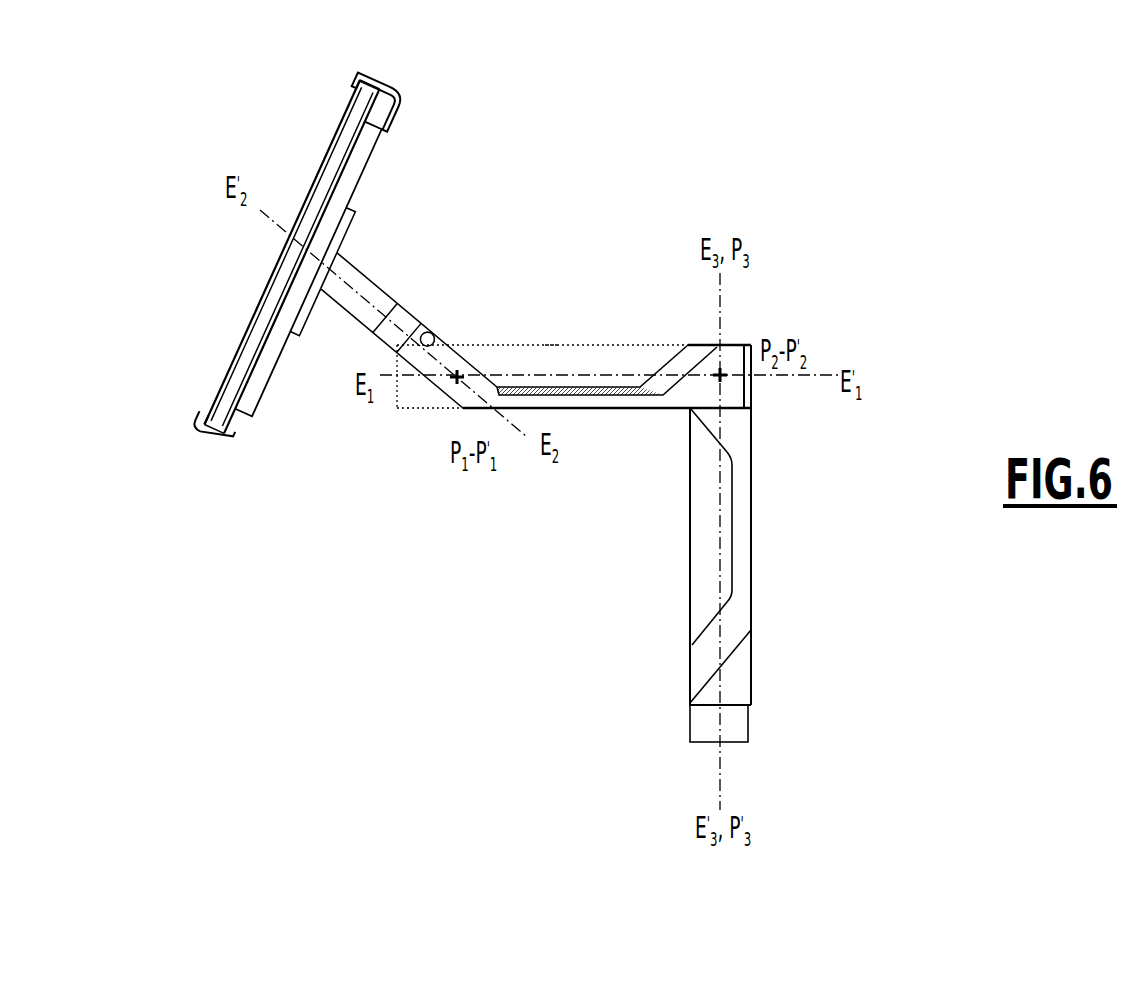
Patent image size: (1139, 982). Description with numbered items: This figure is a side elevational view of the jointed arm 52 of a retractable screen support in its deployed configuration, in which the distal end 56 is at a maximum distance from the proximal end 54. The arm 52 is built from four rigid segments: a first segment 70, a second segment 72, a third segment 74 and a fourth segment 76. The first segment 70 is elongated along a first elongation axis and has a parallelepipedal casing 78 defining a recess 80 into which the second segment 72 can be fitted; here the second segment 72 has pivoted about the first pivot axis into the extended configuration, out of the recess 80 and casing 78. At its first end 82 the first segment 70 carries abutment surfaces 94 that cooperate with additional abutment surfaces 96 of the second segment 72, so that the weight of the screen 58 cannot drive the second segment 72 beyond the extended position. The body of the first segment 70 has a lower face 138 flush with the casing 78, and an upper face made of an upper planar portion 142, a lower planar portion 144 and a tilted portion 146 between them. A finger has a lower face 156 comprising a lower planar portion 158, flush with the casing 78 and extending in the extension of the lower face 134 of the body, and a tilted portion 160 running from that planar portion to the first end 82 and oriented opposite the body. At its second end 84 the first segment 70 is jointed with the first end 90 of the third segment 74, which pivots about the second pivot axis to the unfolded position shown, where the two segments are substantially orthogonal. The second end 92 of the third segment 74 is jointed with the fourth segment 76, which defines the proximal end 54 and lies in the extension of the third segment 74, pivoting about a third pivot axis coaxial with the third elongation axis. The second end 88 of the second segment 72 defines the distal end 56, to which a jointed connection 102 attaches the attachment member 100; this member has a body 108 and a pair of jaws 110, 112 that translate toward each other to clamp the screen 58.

The arm 52 is at (668, 213).
The proximal end 54 is at (733, 725).
The distal end 56 is at (345, 268).
The screen 58 is at (345, 158).
The first segment 70 is at (595, 412).
The second segment 72 is at (405, 302).
The third segment 74 is at (755, 526).
The fourth segment 76 is at (689, 722).
The parallelepipedal casing 78 is at (553, 345).
The recess 80 is at (624, 360).
The first end 82 is at (417, 348).
The second end 84 is at (752, 395).
The second end 88 is at (329, 271).
The first end 90 is at (740, 340).
The second end 92 is at (730, 703).
The abutment surfaces 94 is at (433, 330).
The additional abutment surfaces 96 is at (417, 360).
The attachment member 100 is at (406, 139).
The jointed connection 102 is at (305, 334).
The body 108 is at (360, 170).
The jaw 110 is at (380, 82).
The jaw 112 is at (205, 450).
The lower face 134 is at (568, 400).
The lower face 138 is at (610, 410).
The upper planar portion 142 is at (720, 347).
The lower planar portion 144 is at (538, 387).
The tilted portion 146 is at (683, 363).
The lower face 156 is at (437, 394).
The lower planar portion 158 is at (488, 390).
The tilted portion 160 is at (417, 347).